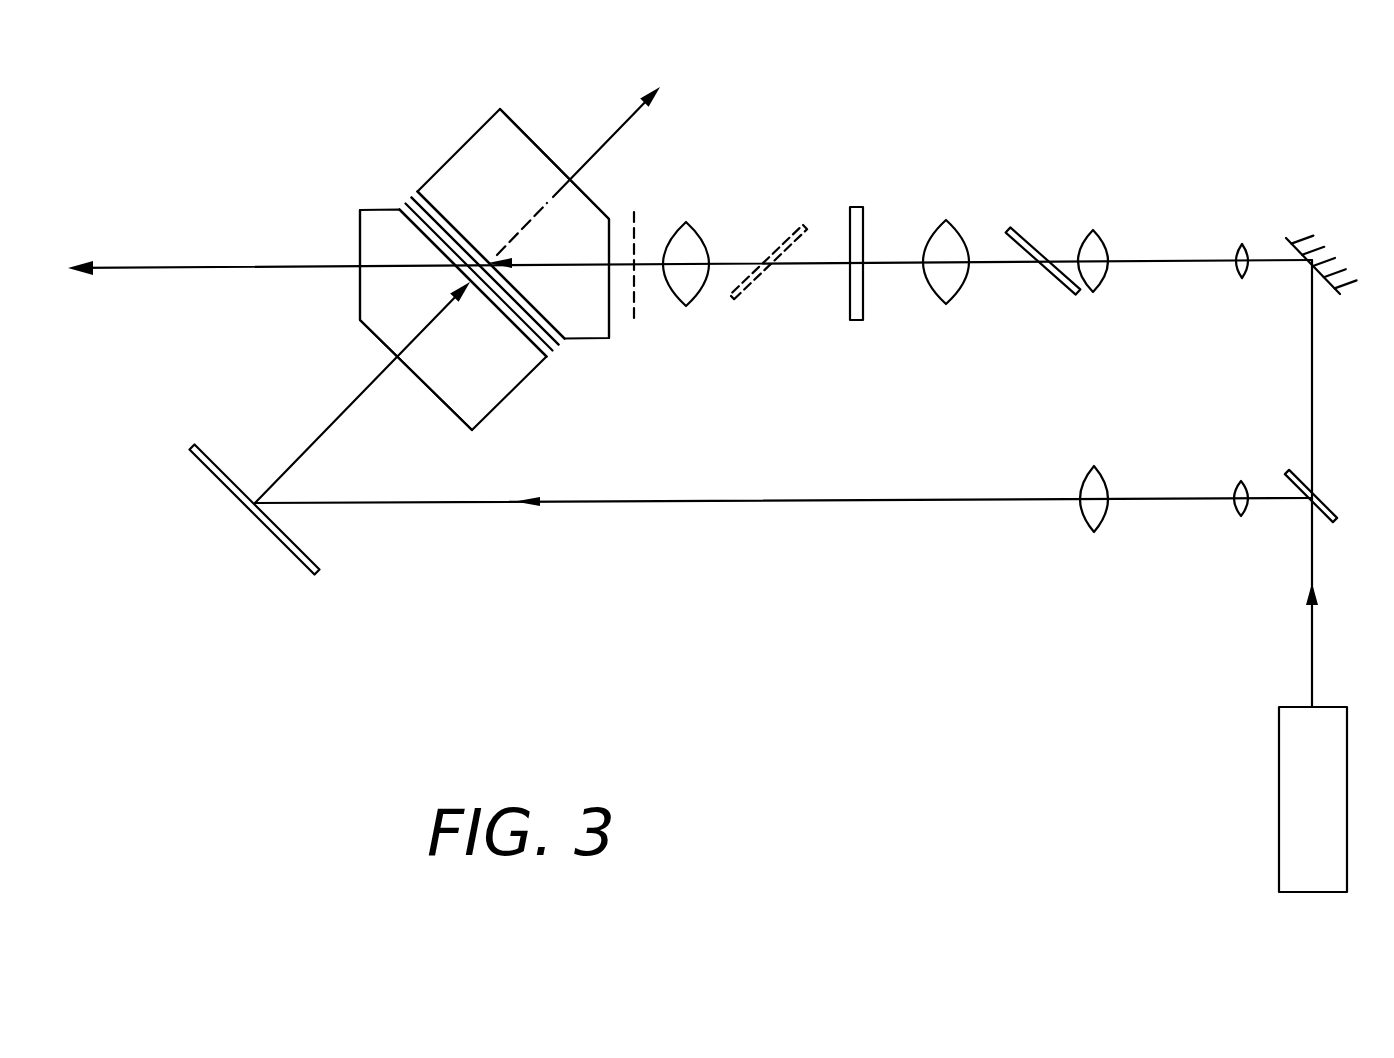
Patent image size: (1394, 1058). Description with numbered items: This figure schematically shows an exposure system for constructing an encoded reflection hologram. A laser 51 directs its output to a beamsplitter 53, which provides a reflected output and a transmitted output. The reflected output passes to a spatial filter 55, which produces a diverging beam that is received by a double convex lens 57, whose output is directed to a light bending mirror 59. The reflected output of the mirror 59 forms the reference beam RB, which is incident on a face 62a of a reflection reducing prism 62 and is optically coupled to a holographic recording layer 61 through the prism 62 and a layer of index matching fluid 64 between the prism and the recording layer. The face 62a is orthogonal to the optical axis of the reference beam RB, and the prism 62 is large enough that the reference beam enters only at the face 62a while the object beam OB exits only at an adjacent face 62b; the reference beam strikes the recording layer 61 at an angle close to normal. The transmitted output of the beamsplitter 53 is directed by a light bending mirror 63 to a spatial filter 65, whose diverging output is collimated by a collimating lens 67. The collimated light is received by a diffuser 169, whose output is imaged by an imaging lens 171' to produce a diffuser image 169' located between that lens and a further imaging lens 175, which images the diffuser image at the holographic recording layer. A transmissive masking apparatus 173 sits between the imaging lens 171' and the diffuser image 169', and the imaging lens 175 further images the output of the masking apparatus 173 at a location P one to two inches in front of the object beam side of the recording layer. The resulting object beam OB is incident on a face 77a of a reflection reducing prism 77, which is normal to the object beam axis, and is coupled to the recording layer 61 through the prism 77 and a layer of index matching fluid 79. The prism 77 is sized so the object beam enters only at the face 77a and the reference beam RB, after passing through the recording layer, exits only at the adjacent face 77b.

The laser 51 is at (1279, 797).
The beamsplitter 53 is at (1328, 518).
The spatial filter 55 is at (1240, 515).
The double convex lens 57 is at (1092, 532).
The light bending mirror 59 is at (305, 567).
The holographic recording layer 61 is at (408, 199).
The reflection reducing prism 62 is at (498, 385).
The prism face 62a is at (455, 417).
The prism face 62b is at (358, 228).
The light bending mirror 63 is at (1318, 283).
The index matching fluid 64 is at (548, 352).
The spatial filter 65 is at (1243, 245).
The collimating lens 67 is at (1100, 233).
The reflection reducing prism 77 is at (470, 140).
The prism face 77a is at (611, 236).
The prism face 77b is at (518, 125).
The index matching fluid 79 is at (410, 197).
The diffuser 169 is at (1054, 287).
The diffuser image 169' is at (773, 232).
The imaging lens 171' is at (965, 234).
The transmissive masking apparatus 173 is at (864, 315).
The imaging lens 175 is at (690, 300).
The location P is at (634, 323).
The object beam OB is at (560, 262).
The reference beam RB is at (333, 417).